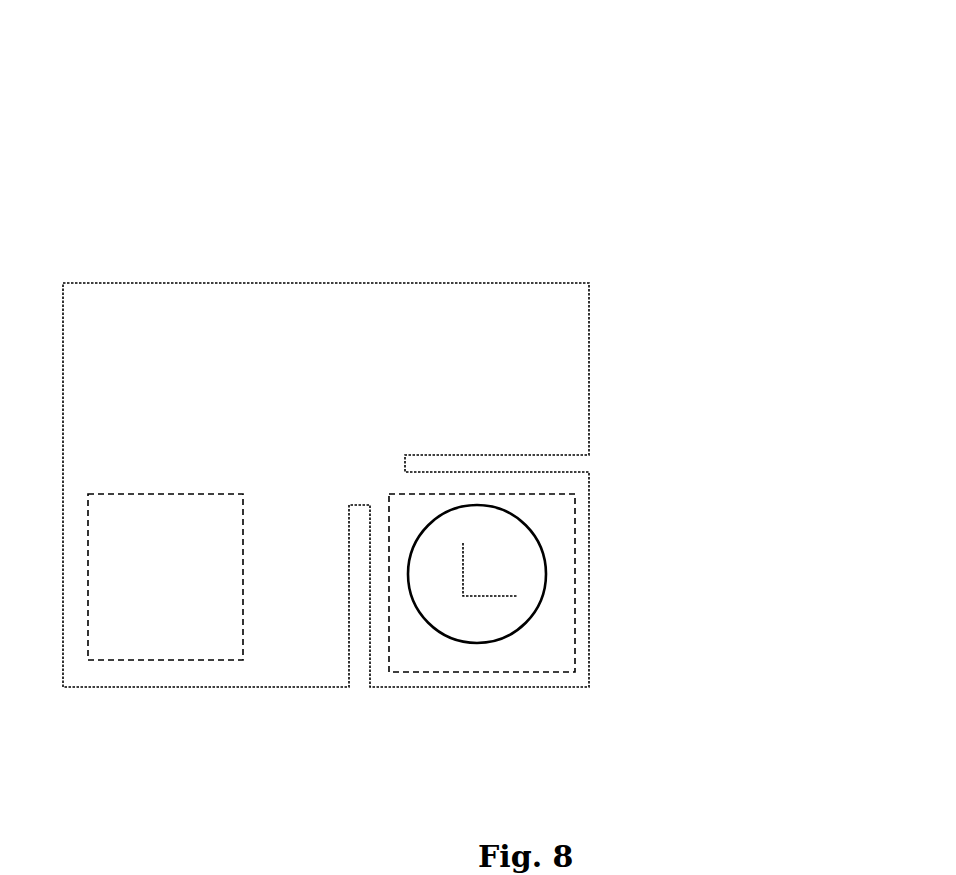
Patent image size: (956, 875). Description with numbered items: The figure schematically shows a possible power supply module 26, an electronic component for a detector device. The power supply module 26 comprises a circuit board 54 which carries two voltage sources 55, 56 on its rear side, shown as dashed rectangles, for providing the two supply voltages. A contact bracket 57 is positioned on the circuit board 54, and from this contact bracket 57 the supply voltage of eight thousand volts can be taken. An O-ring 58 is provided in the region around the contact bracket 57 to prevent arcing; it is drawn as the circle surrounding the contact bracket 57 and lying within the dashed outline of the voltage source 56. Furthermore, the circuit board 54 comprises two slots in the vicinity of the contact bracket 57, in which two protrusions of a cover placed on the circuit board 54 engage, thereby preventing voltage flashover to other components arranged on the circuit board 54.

The power supply module 26 is at (526, 102).
The circuit board 54 is at (575, 332).
The voltage source 55 is at (166, 557).
The voltage source 56 is at (432, 508).
The contact bracket 57 is at (473, 600).
The O-ring 58 is at (527, 525).